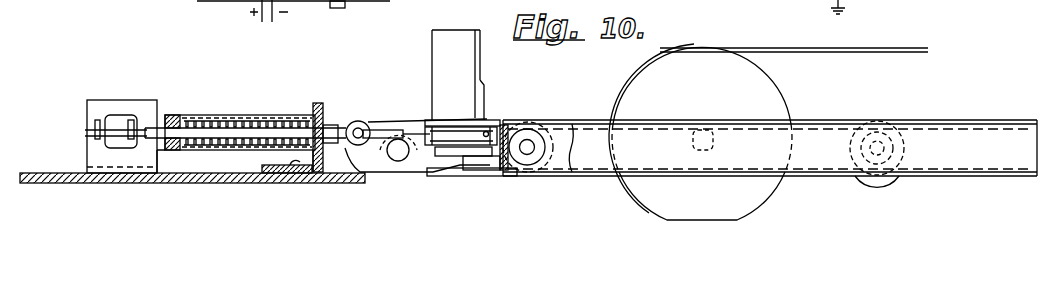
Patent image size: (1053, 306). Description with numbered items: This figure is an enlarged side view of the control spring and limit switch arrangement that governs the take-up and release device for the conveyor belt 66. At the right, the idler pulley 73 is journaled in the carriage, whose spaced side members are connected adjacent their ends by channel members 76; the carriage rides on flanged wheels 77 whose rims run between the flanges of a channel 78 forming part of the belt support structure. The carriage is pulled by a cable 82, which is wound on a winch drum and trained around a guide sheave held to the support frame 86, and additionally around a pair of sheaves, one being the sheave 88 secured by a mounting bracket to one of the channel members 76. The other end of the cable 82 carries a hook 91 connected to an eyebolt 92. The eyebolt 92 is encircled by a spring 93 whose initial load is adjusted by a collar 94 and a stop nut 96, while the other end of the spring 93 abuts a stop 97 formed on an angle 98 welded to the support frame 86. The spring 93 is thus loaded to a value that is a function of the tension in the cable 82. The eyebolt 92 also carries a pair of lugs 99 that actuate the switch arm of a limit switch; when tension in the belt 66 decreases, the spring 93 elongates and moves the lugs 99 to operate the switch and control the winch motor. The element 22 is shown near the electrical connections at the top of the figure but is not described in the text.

The lead 22 is at (350, 2).
The belt 66 is at (850, 50).
The idler pulley 73 is at (768, 90).
The channel members 76 is at (530, 125).
The flanged wheels 77 is at (527, 120).
The channel 78 is at (803, 140).
The cable 82 is at (412, 126).
The support frame 86 is at (208, 173).
The sheave 88 is at (482, 127).
The hook 91 is at (385, 127).
The eyebolt 92 is at (362, 127).
The spring 93 is at (242, 116).
The collar 94 is at (162, 117).
The stop nut 96 is at (163, 116).
The stop 97 is at (314, 115).
The angle 98 is at (297, 165).
The lugs 99 is at (133, 112).